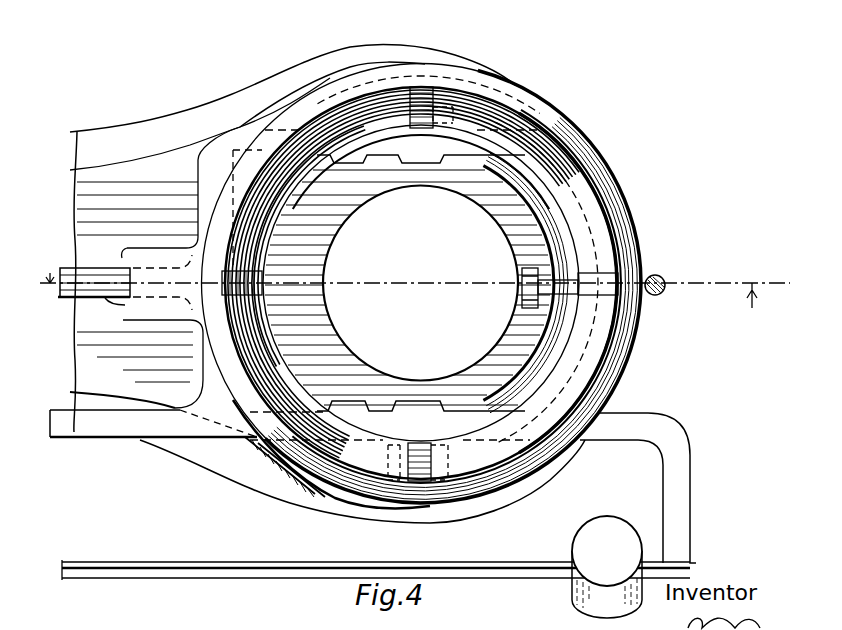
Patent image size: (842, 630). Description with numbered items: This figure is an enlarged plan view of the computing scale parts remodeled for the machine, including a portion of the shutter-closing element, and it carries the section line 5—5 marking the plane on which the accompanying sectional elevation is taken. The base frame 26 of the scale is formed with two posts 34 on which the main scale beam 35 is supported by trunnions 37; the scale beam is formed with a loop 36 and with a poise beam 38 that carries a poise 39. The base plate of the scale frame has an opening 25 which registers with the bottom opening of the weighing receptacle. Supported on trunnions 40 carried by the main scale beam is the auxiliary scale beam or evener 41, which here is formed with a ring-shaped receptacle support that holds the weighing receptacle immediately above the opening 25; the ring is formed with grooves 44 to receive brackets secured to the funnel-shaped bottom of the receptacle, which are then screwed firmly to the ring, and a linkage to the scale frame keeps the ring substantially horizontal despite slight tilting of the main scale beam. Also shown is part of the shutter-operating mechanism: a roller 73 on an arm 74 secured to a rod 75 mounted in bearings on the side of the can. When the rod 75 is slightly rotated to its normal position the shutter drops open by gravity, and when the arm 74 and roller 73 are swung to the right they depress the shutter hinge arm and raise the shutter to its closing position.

The section line 5— 5 is at (415, 281).
The opening 25 is at (379, 366).
The base frame 26 is at (390, 47).
The posts 34 is at (350, 67).
The main scale beam 35 is at (125, 305).
The loop 36 is at (421, 284).
The trunnions 37 is at (356, 101).
The poise beam 38 is at (518, 556).
The poise 39 is at (607, 567).
The trunnions 40 is at (432, 126).
The auxiliary scale beam or evener 41 is at (606, 162).
The grooves 44 is at (630, 318).
The roller 73 is at (522, 280).
The arm 74 is at (522, 292).
The rod 75 is at (665, 280).